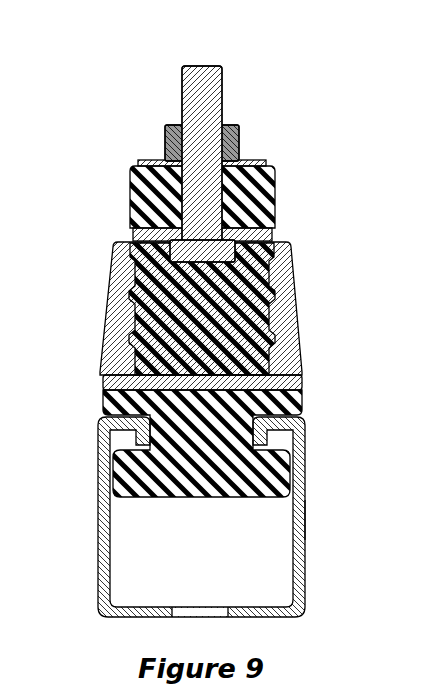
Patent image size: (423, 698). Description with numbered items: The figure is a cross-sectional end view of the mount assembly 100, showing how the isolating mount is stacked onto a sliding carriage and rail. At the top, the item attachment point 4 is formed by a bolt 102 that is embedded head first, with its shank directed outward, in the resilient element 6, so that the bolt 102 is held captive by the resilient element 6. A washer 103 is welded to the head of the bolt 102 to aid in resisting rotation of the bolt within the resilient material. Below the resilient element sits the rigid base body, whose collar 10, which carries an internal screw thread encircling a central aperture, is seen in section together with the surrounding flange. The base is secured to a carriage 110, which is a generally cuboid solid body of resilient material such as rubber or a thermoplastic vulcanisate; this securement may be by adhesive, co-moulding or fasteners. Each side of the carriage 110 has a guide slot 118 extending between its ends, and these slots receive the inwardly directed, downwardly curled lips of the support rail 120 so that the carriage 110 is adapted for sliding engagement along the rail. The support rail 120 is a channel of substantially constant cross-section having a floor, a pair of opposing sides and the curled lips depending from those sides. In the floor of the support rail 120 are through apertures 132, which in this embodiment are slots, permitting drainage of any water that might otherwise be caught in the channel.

The mount assembly 100 is at (304, 129).
The item attachment point 4 is at (224, 69).
The bolt 102 is at (190, 90).
The resilient element 6 is at (276, 192).
The washer 103 is at (133, 222).
The collar 10 is at (292, 284).
The carriage 110 is at (304, 392).
The support rail 120 is at (305, 498).
The guide slot 118 is at (363, 517).
The through apertures 132 is at (200, 607).